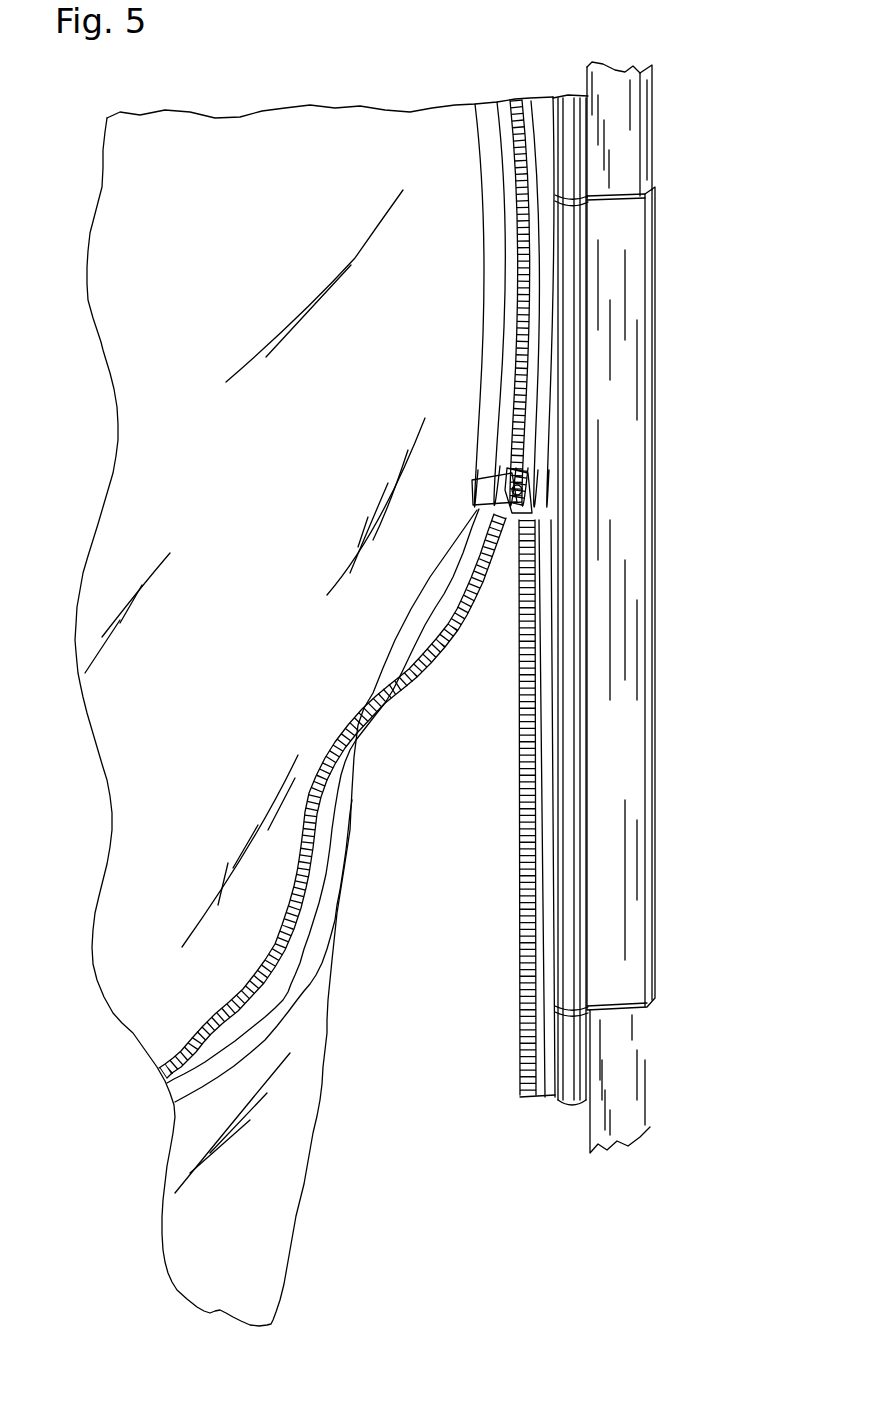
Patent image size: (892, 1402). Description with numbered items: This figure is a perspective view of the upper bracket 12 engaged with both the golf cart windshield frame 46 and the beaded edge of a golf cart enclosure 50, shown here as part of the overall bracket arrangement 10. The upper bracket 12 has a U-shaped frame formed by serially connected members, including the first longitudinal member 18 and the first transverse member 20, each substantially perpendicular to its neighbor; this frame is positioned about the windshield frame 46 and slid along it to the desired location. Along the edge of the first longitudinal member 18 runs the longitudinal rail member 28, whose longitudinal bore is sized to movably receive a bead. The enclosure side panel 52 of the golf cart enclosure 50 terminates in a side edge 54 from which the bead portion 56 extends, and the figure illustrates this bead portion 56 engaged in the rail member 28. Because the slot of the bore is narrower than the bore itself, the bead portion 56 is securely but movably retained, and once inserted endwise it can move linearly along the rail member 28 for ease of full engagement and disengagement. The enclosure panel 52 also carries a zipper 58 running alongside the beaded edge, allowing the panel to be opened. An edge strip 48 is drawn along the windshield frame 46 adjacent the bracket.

The closure assembly 10 is at (577, 605).
The upper bracket 12 is at (662, 607).
The first longitudinal member 18 is at (628, 712).
The first transverse member 20 is at (652, 778).
The longitudinal rail member 28 is at (570, 462).
The golf cart windshield frame 46 is at (628, 132).
The strip edge 48 is at (652, 158).
The golf cart enclosure 50 is at (262, 110).
The enclosure side panel 52 is at (355, 135).
The side edge 54 is at (540, 100).
The bead portion 56 is at (630, 605).
The zipper 58 is at (503, 478).